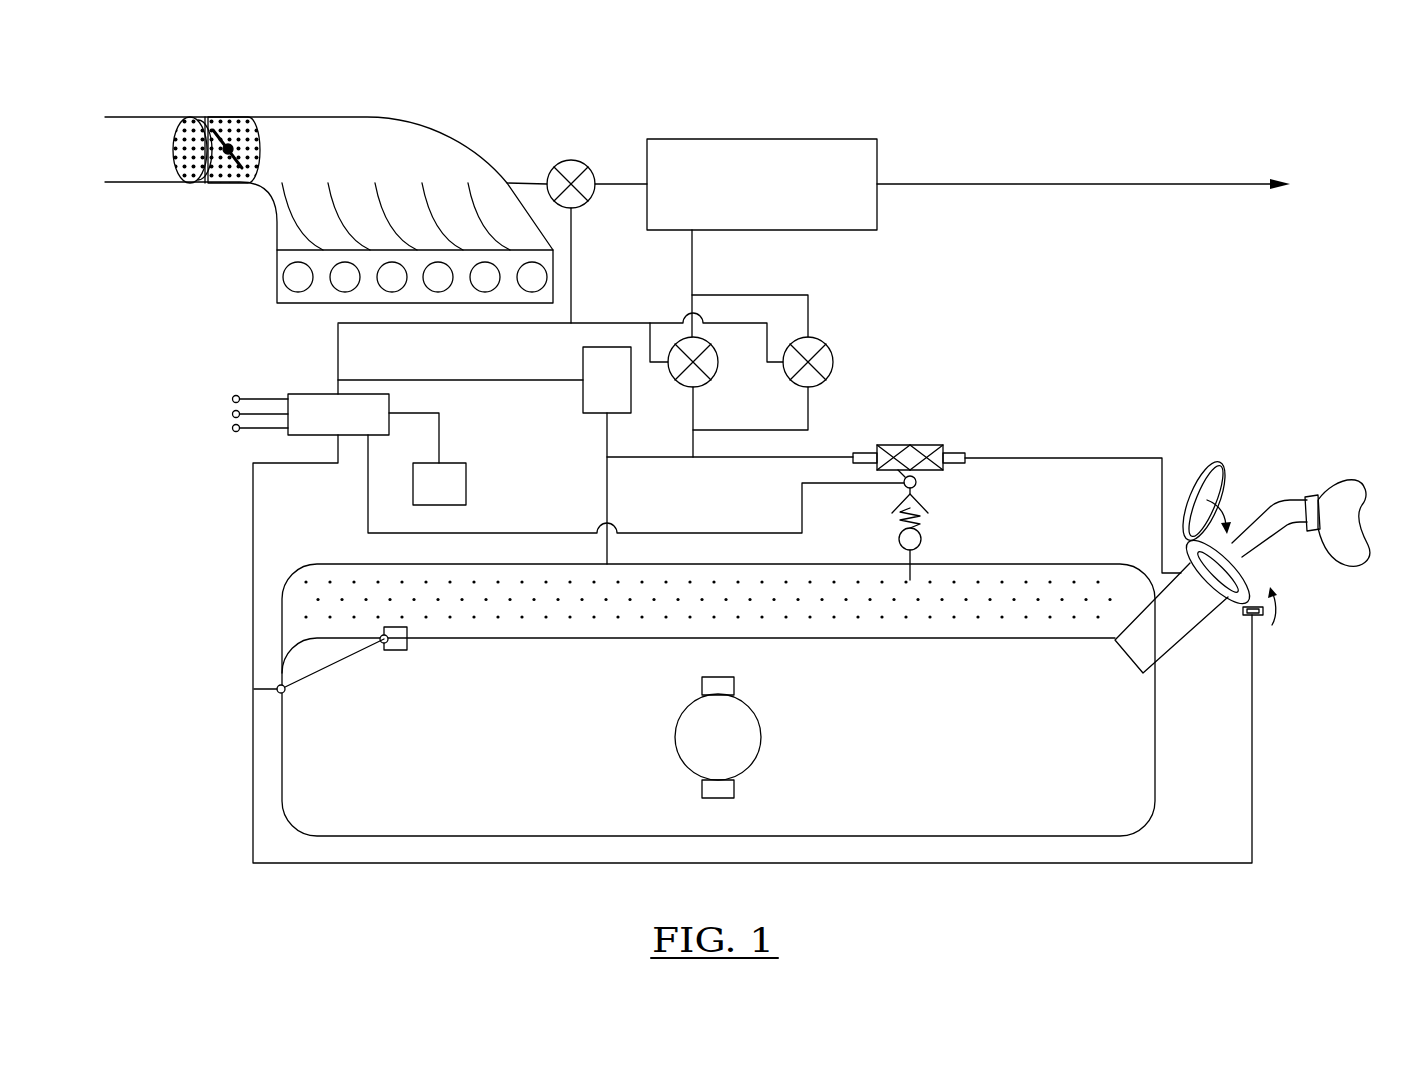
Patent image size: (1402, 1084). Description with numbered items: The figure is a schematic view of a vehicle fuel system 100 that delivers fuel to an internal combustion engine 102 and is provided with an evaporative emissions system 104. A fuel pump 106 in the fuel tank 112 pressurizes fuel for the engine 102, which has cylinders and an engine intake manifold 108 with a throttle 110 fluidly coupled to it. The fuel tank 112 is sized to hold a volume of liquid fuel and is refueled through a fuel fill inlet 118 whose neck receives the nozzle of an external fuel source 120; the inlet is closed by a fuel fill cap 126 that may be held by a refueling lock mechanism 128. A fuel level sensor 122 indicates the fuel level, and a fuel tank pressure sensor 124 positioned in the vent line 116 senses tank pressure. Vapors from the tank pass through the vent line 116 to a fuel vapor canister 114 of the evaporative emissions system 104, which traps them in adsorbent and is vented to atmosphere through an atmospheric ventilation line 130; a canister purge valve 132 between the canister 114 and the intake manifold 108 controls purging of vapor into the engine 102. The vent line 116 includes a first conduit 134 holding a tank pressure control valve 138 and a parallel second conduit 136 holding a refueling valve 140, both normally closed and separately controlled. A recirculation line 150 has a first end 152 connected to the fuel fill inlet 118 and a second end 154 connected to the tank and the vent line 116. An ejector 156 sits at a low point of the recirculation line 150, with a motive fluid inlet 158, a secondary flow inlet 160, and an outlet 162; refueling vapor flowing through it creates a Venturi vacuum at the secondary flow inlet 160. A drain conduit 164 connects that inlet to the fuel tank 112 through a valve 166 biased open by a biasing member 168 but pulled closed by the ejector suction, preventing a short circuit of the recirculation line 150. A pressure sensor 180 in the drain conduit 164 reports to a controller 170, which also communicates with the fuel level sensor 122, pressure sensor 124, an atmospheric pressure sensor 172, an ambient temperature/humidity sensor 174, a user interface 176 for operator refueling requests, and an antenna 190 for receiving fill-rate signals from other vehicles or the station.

The fuel system 100 is at (155, 545).
The internal combustion engine 102 is at (277, 285).
The evaporative emissions system 104 is at (906, 249).
The fuel pump 106 is at (762, 737).
The engine intake manifold 108 is at (420, 122).
The throttle 110 is at (223, 117).
The fuel tank 112 is at (282, 772).
The fuel vapor canister 114 is at (790, 139).
The vent line 116 is at (692, 272).
The fuel fill inlet 118 is at (1180, 640).
The external fuel source 120 is at (1277, 500).
The fuel level sensor 122 is at (318, 672).
The fuel tank pressure sensor 124 is at (582, 400).
The fuel fill cap 126 is at (1215, 463).
The refueling lock mechanism 128 is at (1257, 615).
The atmospheric ventilation line 130 is at (1070, 183).
The canister purge valve 132 is at (565, 160).
The first conduit 134 is at (693, 418).
The second conduit 136 is at (812, 395).
The tank pressure control valve 138 is at (700, 384).
The refueling valve 140 is at (797, 345).
The recirculation line 150 is at (770, 460).
The first end 152 is at (1145, 498).
The second end 154 is at (620, 488).
The ejector 156 is at (925, 445).
The motive fluid inlet 158 is at (868, 453).
The secondary flow inlet 160 is at (920, 478).
The outlet 162 is at (953, 463).
The drain conduit 164 is at (905, 490).
The valve 166 is at (922, 538).
The biasing member 168 is at (897, 525).
The controller 170 is at (752, 593).
The atmospheric pressure sensor 172 is at (232, 414).
The ambient temperature/humidity sensor 174 is at (232, 398).
The user interface 176 is at (439, 484).
The pressure sensor 180 is at (890, 445).
The antenna 190 is at (236, 432).